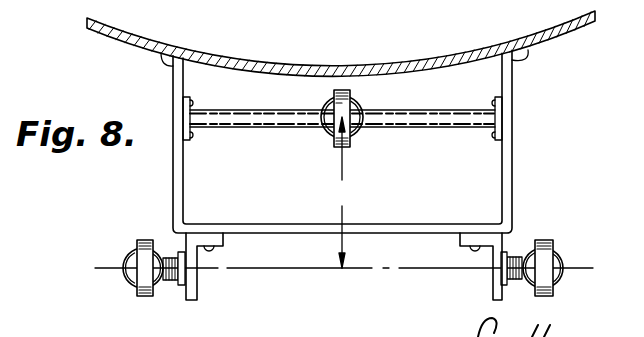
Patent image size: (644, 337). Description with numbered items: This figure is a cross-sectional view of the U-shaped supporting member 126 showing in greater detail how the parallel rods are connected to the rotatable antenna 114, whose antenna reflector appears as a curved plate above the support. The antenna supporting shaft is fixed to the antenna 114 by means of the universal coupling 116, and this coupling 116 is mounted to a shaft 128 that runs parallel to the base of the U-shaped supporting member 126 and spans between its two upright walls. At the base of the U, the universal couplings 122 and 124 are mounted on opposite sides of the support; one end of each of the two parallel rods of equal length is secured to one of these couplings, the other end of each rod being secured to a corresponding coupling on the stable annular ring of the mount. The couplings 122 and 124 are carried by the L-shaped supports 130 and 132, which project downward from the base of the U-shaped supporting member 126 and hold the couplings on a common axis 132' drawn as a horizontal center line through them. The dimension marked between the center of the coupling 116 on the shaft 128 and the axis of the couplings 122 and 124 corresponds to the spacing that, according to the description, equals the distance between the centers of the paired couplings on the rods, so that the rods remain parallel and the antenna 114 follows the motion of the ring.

The rotatable antenna 114 is at (165, 50).
The universal coupling 116 is at (352, 100).
The universal coupling 122 is at (553, 254).
The universal coupling 124 is at (128, 292).
The U-shaped supporting member 126 is at (513, 168).
The shaft 128 is at (289, 120).
The L-shaped support 130 is at (182, 303).
The L-shaped support 132 is at (473, 271).
The pivot axis 132' is at (344, 288).